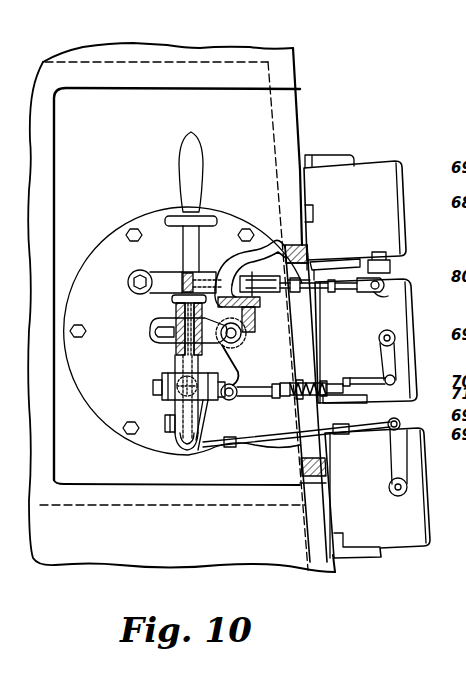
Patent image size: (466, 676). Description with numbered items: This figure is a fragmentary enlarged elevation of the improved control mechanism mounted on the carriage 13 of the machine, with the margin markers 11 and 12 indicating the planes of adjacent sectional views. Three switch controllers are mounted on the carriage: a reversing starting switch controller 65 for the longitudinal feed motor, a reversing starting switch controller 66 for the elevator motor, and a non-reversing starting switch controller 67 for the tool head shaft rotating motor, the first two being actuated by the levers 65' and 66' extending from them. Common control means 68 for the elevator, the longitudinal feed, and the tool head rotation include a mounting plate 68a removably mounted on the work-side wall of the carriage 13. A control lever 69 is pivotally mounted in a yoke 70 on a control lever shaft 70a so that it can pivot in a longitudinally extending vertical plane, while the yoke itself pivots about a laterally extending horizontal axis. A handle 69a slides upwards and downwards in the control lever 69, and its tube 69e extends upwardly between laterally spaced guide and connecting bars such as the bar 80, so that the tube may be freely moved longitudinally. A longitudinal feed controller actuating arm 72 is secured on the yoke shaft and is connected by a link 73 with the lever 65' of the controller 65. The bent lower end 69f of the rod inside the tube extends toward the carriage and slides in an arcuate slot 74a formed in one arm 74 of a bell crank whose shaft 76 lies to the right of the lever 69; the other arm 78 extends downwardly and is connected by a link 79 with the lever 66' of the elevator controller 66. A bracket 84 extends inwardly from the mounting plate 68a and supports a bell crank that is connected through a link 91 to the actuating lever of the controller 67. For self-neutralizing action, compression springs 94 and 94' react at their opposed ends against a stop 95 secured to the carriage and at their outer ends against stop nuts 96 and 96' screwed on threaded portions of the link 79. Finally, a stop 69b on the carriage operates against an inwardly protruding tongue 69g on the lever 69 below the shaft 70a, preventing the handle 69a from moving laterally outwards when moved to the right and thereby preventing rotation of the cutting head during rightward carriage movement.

The section line 11- 11 is at (440, 92).
The section line 12- 12 is at (34, 56).
The carriage 13 is at (234, 566).
The reversing starting switch controller 65 is at (377, 493).
The lever 65' is at (381, 463).
The reversing starting switch controller 66 is at (377, 341).
The lever 66' is at (371, 357).
The non-reversing starting switch controller 67 is at (404, 192).
The common control means 68 is at (206, 201).
The mounting plate 68a is at (108, 424).
The control lever 69 is at (175, 373).
The handle 69a is at (197, 157).
The stop 69b is at (174, 443).
The tube 69e is at (197, 250).
The lower end of rod 69f is at (172, 327).
The tongue 69g is at (190, 442).
The yoke 70 is at (165, 399).
The control lever shaft 70a is at (160, 390).
The longitudinal feed controller actuating arm 72 is at (204, 430).
The link 73 is at (249, 436).
The arm 74 is at (180, 322).
The arcuate slot 74a is at (158, 341).
The bell crank shaft 76 is at (238, 351).
The arm 78 is at (235, 384).
The link 79 is at (258, 387).
The guide and connecting bar 80 is at (172, 278).
The bracket 84 is at (252, 312).
The link 91 is at (306, 289).
The compression spring 94 is at (337, 368).
The compression spring 94' is at (331, 374).
The stop 95 is at (310, 393).
The stop nut 96 is at (285, 404).
The stop nut 96' is at (345, 411).